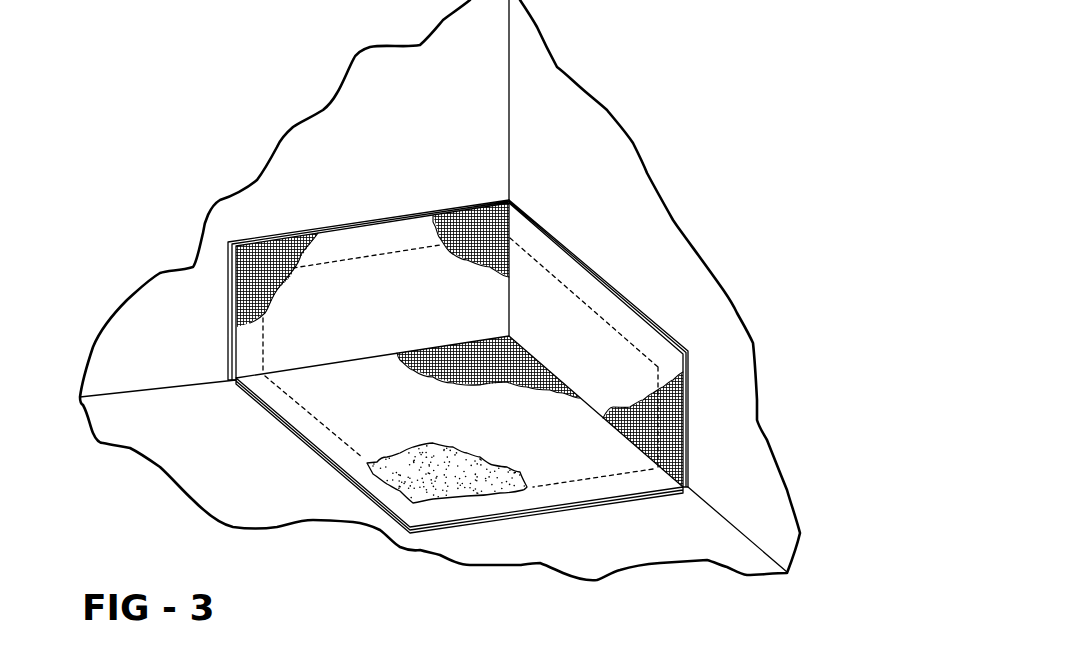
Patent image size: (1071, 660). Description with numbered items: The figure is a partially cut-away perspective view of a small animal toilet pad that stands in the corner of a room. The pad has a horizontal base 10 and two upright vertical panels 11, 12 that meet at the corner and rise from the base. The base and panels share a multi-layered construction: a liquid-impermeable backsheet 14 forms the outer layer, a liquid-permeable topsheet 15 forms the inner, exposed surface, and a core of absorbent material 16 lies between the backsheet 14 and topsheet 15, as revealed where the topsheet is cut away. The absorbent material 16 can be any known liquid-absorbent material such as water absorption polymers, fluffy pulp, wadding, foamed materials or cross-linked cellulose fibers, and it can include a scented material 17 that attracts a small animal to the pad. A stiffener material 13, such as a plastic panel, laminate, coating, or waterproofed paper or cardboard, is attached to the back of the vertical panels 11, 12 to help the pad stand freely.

The base 10 is at (323, 409).
The vertical panel 11 is at (384, 210).
The vertical panel 12 is at (552, 223).
The stiffener material 13 is at (262, 236).
The liquid-impermeable backsheet 14 is at (460, 508).
The liquid-permeable topsheet 15 is at (268, 346).
The absorbent material 16 is at (430, 445).
The scented material 17 is at (400, 493).